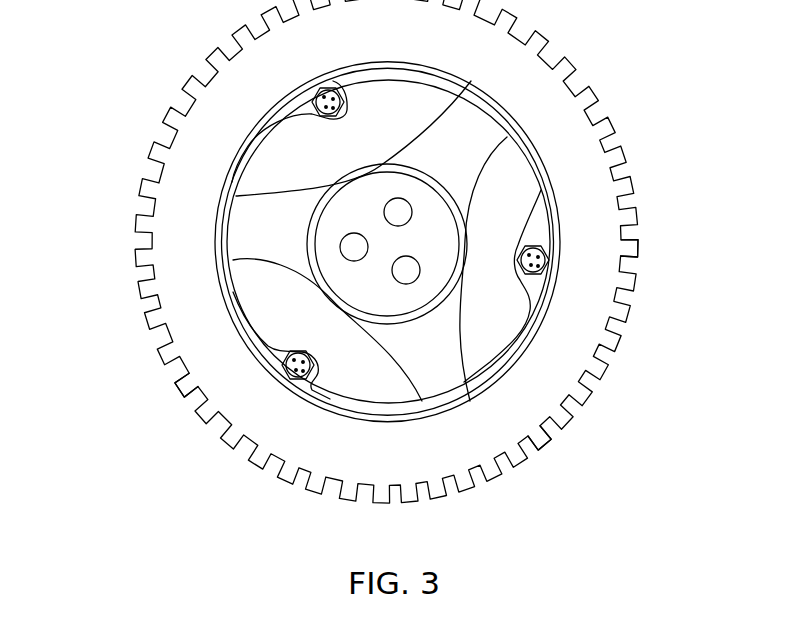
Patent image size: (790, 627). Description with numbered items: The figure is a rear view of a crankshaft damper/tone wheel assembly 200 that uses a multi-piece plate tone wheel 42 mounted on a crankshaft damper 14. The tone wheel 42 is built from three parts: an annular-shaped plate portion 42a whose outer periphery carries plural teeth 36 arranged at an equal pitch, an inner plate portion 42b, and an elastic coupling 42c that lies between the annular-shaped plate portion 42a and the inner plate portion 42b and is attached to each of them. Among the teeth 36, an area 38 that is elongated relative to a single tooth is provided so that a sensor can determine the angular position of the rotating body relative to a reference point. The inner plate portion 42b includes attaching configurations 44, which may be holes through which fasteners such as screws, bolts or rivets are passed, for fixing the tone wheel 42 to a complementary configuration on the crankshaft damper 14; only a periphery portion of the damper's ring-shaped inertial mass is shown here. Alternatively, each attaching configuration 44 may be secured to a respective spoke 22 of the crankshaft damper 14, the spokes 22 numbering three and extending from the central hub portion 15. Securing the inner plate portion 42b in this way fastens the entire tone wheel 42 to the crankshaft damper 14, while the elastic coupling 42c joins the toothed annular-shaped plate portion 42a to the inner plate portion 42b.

The crankshaft damper/tone wheel assembly 200 is at (143, 61).
The crankshaft damper 14 is at (151, 320).
The tone wheel 42 is at (150, 217).
The annular-shaped plate portion 42a is at (208, 355).
The inner plate portion 42b is at (262, 331).
The elastic coupling 42c is at (551, 178).
The teeth 36 is at (638, 248).
The elongated area 38 is at (555, 443).
The hub portion 15 is at (464, 272).
The attaching configuration 44 is at (326, 120).
The spokes 22 is at (426, 351).